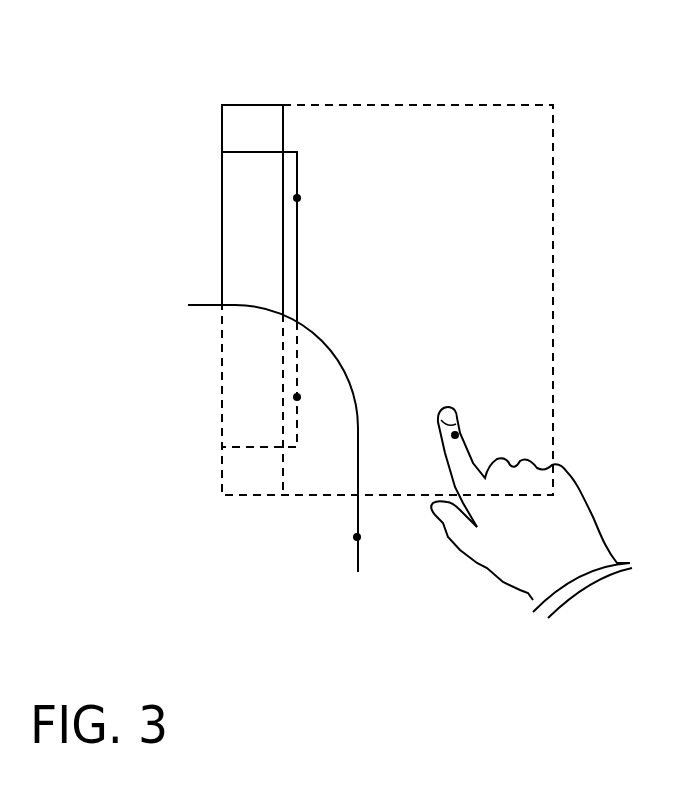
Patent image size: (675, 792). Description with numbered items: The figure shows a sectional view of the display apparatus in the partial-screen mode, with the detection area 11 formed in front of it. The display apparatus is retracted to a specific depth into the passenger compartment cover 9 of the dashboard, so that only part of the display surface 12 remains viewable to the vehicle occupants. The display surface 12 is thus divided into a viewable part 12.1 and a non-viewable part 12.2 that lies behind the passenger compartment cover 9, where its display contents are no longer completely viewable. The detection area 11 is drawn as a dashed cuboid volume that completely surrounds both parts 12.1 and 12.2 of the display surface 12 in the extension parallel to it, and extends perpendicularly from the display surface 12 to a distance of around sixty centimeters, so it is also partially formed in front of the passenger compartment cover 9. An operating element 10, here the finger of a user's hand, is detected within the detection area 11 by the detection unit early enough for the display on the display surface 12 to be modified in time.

The passenger compartment cover 9 is at (357, 537).
The operating element 10 is at (455, 435).
The detection area 11 is at (465, 233).
The display surface 12 is at (313, 289).
The viewable part of the display surface 12.1 is at (297, 198).
The non-viewable part of the display surface 12.2 is at (297, 397).